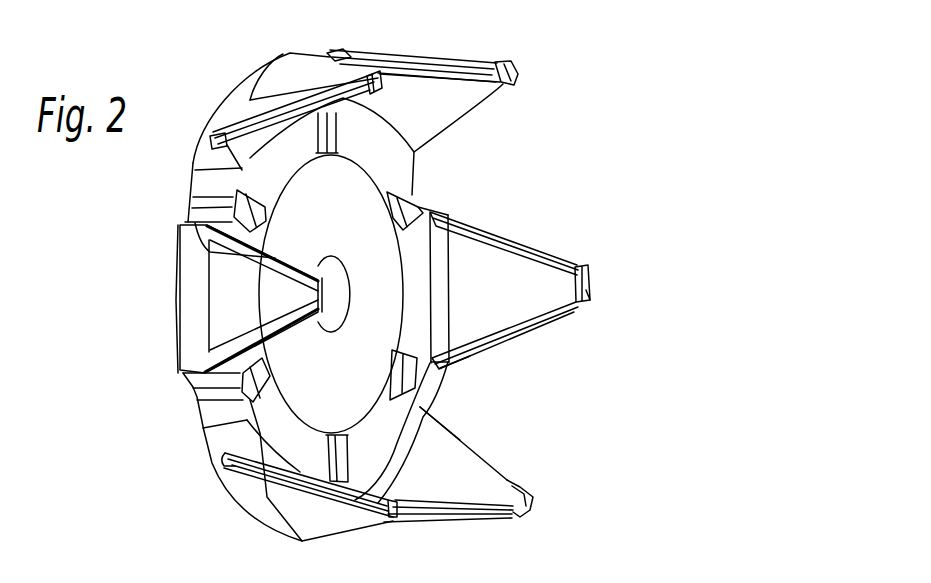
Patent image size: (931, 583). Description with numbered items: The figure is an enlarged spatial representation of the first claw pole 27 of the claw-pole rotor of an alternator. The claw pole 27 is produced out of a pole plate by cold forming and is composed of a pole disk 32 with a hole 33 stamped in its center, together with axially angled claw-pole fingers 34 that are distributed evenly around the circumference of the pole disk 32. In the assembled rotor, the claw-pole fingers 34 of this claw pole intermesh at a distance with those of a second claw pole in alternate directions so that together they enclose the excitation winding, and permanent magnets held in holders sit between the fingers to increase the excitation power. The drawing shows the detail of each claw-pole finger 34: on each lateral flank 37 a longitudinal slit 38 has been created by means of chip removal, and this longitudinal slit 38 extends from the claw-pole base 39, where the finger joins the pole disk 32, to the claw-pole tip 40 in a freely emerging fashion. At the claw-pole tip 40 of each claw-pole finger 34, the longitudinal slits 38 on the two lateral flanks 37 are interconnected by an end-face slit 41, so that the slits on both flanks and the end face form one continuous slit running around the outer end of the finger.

The first claw pole 27 is at (520, 160).
The pole disk 32 is at (400, 410).
The hole 33 is at (333, 317).
The claw-pole fingers 34 is at (497, 258).
The lateral flank 37 is at (537, 328).
The longitudinal slit 38 is at (457, 56).
The claw-pole base 39 is at (445, 343).
The claw-pole tip 40 is at (590, 294).
The end-face slit 41 is at (519, 72).